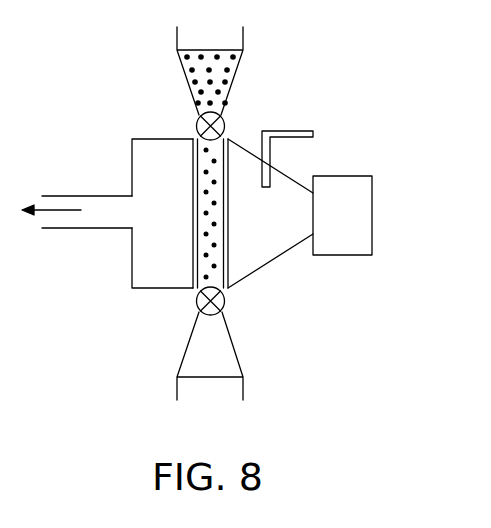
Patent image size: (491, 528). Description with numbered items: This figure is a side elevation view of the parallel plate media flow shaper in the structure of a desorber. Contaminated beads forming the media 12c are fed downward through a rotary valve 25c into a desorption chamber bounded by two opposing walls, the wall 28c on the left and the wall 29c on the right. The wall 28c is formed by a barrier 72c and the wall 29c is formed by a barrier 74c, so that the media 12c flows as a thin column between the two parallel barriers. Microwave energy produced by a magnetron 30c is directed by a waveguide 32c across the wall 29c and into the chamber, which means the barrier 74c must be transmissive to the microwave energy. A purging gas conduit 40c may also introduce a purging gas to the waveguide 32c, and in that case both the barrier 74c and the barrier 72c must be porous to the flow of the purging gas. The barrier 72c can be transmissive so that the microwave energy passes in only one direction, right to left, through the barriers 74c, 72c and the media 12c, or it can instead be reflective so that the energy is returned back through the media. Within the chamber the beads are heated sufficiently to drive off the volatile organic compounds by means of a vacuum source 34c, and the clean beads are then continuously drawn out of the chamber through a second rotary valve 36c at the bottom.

The media 12c is at (207, 240).
The rotary valve 25c is at (224, 120).
The wall 28c is at (197, 192).
The wall 29c is at (228, 208).
The magnetron 30c is at (360, 207).
The waveguide 32c is at (272, 193).
The vacuum source 34c is at (147, 152).
The rotary valve 36c is at (224, 307).
The purging gas conduit 40c is at (282, 130).
The barrier 72c is at (186, 266).
The barrier 74c is at (247, 242).